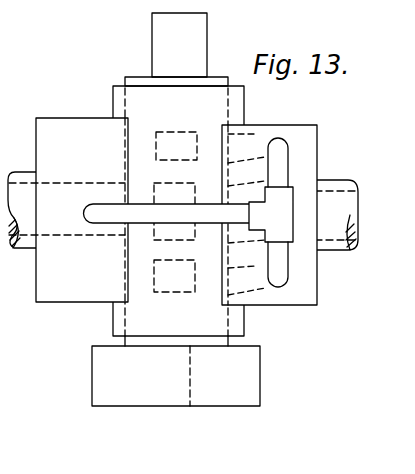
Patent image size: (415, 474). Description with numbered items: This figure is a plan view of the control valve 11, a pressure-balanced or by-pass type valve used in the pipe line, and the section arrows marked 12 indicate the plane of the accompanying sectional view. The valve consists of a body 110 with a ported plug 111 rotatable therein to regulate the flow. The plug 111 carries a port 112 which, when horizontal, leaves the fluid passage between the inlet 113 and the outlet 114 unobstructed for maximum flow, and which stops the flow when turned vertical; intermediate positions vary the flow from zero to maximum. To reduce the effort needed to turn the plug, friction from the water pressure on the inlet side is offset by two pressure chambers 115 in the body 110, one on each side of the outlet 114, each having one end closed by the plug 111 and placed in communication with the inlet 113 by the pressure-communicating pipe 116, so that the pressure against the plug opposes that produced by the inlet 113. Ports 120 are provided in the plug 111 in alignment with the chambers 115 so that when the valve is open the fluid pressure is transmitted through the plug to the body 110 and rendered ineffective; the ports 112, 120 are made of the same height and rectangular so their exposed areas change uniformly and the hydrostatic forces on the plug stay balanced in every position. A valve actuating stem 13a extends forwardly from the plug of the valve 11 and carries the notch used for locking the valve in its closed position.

The control valve 11 is at (245, 109).
The section line 12- 12 is at (27, 316).
The valve actuating stem 13a is at (219, 398).
The body 110 is at (307, 153).
The ported plug 111 is at (135, 81).
The port 112 is at (152, 229).
The inlet 113 is at (53, 181).
The outlet 114 is at (302, 243).
The pressure chambers 115 is at (258, 137).
The pressure-communicating pipe 116 is at (167, 213).
The ports 120 is at (170, 130).